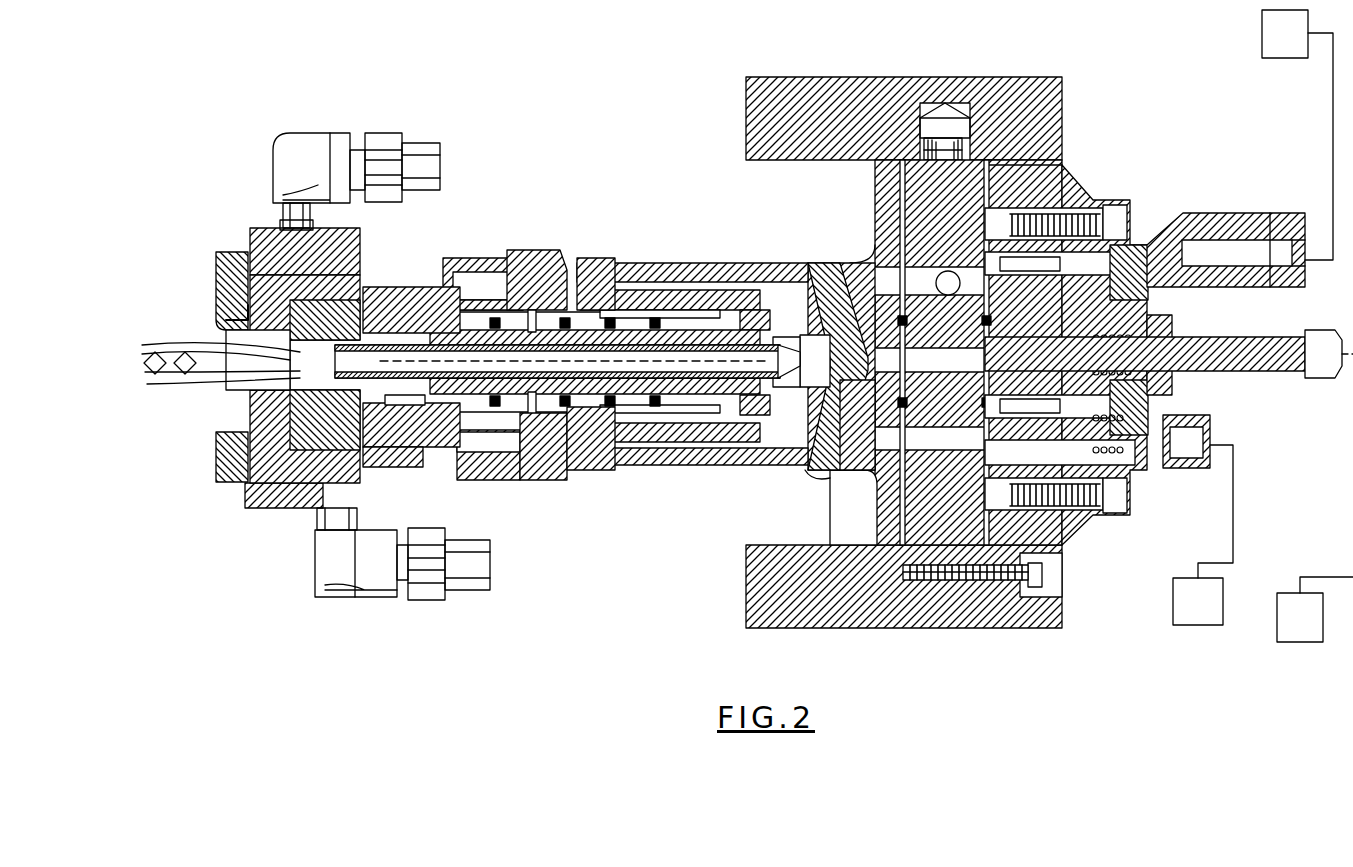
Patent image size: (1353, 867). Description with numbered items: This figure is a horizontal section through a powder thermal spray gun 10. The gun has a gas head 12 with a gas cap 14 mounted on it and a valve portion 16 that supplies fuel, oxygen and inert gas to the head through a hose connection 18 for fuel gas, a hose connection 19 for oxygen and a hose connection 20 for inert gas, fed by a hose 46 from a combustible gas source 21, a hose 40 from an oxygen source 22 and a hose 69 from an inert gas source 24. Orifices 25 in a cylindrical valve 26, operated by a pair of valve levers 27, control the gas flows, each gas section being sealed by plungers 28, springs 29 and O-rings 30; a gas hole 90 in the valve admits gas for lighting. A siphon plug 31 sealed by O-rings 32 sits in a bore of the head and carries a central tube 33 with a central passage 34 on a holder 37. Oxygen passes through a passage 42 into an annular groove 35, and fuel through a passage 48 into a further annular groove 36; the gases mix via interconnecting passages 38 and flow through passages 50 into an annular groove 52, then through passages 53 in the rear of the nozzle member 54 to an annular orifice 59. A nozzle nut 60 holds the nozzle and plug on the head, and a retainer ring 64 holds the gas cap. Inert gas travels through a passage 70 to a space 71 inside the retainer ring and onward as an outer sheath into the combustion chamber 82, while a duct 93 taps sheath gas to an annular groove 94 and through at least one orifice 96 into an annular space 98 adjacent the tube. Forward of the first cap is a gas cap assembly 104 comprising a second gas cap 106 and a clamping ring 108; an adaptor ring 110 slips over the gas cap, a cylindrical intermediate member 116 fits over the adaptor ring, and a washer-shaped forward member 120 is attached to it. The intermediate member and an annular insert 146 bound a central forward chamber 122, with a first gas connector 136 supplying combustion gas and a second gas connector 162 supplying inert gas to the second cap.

The thermal spray gun 10 is at (616, 160).
The gas head 12 is at (680, 262).
The gas cap 14 is at (350, 430).
The valve portion 16 is at (873, 198).
The hose connection 18 is at (1185, 470).
The hose connection 19 is at (1295, 390).
The hose connection 20 is at (1275, 212).
The combustible gas source 21 is at (1198, 601).
The oxygen source 22 is at (1300, 617).
The inert gas source 24 is at (1285, 34).
The orifices 25 is at (862, 478).
The cylindrical valve 26 is at (930, 500).
The valve levers 27 is at (746, 120).
The plungers 28 is at (1160, 330).
The springs 29 is at (1130, 250).
The O-rings 30 is at (1068, 262).
The siphon plug 31 is at (590, 440).
The O-rings 32 is at (770, 420).
The central tube 33 is at (808, 335).
The central passage 34 is at (760, 362).
The annular groove 35 is at (620, 330).
The annular groove 36 is at (545, 305).
The holder 37 is at (755, 318).
The interconnecting passages 38 is at (585, 320).
The hose 40 is at (1312, 577).
The passage 42 is at (840, 372).
The hose 46 is at (1233, 512).
The passage 48 is at (855, 423).
The passages 50 is at (530, 420).
The annular groove 52 is at (486, 286).
The passages 53 is at (488, 454).
The nozzle member 54 is at (375, 305).
The annular orifice 59 is at (395, 428).
The nozzle nut 60 is at (478, 296).
The retainer ring 64 is at (452, 257).
The hose 69 is at (1333, 108).
The passage 70 is at (838, 366).
The space 71 is at (462, 470).
The combustion chamber 82 is at (554, 360).
The gas hole 90 is at (961, 283).
The duct 93 is at (698, 300).
The annular groove 94 is at (718, 325).
The orifice 96 is at (652, 300).
The annular space 98 is at (610, 440).
The gas cap assembly 104 is at (368, 240).
The second gas cap 106 is at (215, 232).
The clamping ring 108 is at (322, 228).
The adaptor ring 110 is at (345, 262).
The intermediate member 116 is at (245, 490).
The forward member 120 is at (218, 280).
The central forward chamber 122 is at (235, 342).
The first gas connector 136 is at (273, 165).
The annular insert 146 is at (235, 315).
The second gas connector 162 is at (318, 568).